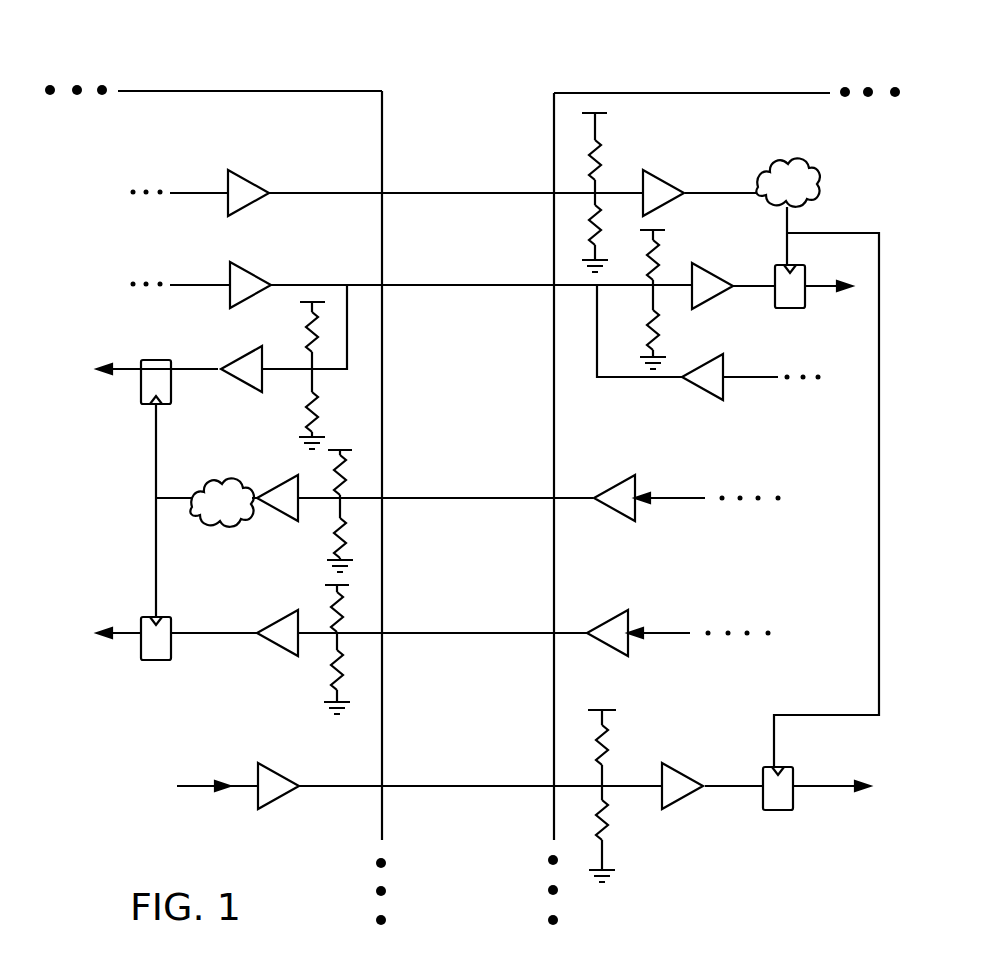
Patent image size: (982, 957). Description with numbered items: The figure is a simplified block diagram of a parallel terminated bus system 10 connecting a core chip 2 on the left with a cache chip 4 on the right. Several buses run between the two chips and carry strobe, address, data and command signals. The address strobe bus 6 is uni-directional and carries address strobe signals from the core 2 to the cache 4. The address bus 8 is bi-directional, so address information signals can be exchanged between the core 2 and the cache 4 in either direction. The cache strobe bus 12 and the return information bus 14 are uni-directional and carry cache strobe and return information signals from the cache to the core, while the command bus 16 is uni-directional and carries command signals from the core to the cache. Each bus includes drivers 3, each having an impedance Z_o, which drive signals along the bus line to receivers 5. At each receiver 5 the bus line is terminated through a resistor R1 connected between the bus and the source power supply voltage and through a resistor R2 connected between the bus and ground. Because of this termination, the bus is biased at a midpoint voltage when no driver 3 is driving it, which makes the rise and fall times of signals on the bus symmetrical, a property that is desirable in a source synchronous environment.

The core chip 2 is at (160, 140).
The driver 3 is at (253, 188).
The cache chip 4 is at (758, 141).
The receiver 5 is at (651, 185).
The address strobe bus 6 is at (497, 195).
The address bus 8 is at (482, 288).
The parallel terminated bus system 10 is at (450, 93).
The cache strobe bus 12 is at (480, 500).
The return information bus 14 is at (495, 635).
The command bus 16 is at (489, 788).
The resistor R1 is at (474, 449).
The resistor R2 is at (482, 537).